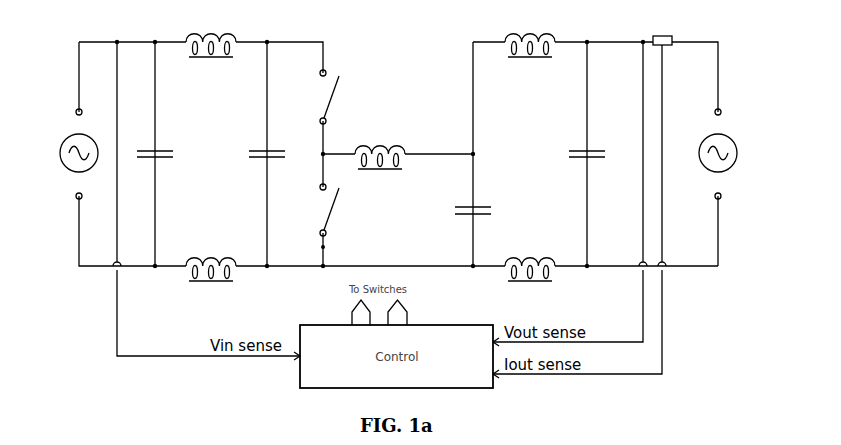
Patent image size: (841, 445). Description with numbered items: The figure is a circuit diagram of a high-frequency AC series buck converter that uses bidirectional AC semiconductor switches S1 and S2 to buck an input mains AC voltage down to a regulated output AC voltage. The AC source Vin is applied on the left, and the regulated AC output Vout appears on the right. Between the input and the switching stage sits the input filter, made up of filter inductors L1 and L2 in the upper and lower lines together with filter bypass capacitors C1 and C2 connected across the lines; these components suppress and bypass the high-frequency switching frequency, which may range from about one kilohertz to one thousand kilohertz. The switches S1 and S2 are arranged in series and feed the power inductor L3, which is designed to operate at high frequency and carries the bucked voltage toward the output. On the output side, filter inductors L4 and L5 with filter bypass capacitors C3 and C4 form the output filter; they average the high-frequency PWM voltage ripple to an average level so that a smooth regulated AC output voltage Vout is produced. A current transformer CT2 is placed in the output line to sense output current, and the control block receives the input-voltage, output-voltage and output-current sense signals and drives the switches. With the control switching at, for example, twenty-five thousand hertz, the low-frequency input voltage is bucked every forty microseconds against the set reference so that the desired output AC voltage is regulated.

The filter inductor L1 is at (211, 34).
The filter inductor L2 is at (211, 259).
The power inductor L3 is at (398, 146).
The filter inductor L4 is at (530, 34).
The filter inductor L5 is at (530, 259).
The filter bypass capacitor C1 is at (168, 156).
The filter bypass capacitor C2 is at (253, 156).
The filter bypass capacitor C3 is at (487, 211).
The filter bypass capacitor C4 is at (599, 156).
The bidirectional AC semiconductor switch S1 is at (318, 97).
The bidirectional AC semiconductor switch S2 is at (318, 210).
The current transformer CT2 is at (663, 31).
The input voltage source Vin is at (70, 154).
The output voltage Vout is at (728, 154).